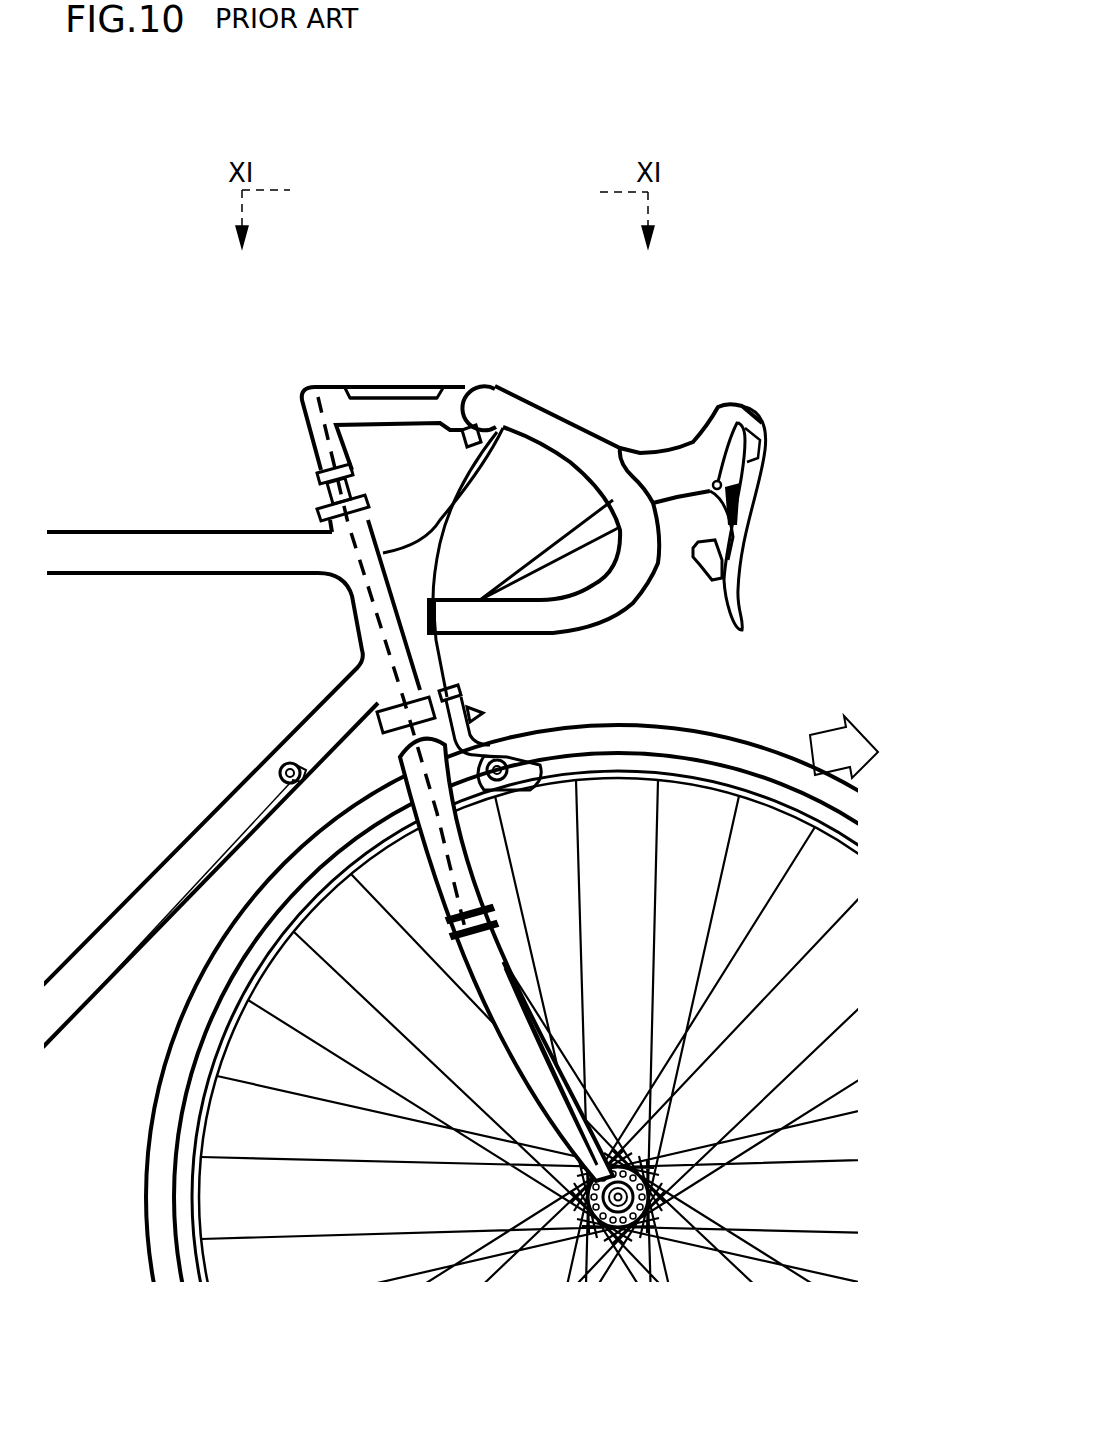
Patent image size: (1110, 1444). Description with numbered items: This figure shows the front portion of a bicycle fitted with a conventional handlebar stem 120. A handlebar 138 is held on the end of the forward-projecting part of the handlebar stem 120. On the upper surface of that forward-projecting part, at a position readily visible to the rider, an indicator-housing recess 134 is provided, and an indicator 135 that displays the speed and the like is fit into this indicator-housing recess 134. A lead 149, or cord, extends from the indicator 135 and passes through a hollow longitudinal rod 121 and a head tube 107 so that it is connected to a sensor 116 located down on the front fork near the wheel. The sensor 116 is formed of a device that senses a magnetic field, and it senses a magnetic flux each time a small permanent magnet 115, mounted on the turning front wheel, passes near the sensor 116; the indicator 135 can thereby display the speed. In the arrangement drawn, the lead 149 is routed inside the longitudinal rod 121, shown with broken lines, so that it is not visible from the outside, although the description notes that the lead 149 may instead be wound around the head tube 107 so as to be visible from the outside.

The head tube 107 is at (348, 600).
The small permanent magnet 115 is at (370, 1012).
The sensor 116 is at (500, 935).
The handlebar stem 120 is at (574, 465).
The hollow longitudinal rod 121 is at (318, 458).
The indicator-housing recess 134 is at (425, 390).
The indicator 135 is at (355, 383).
The handlebar 138 is at (570, 425).
The lead 149 is at (380, 620).